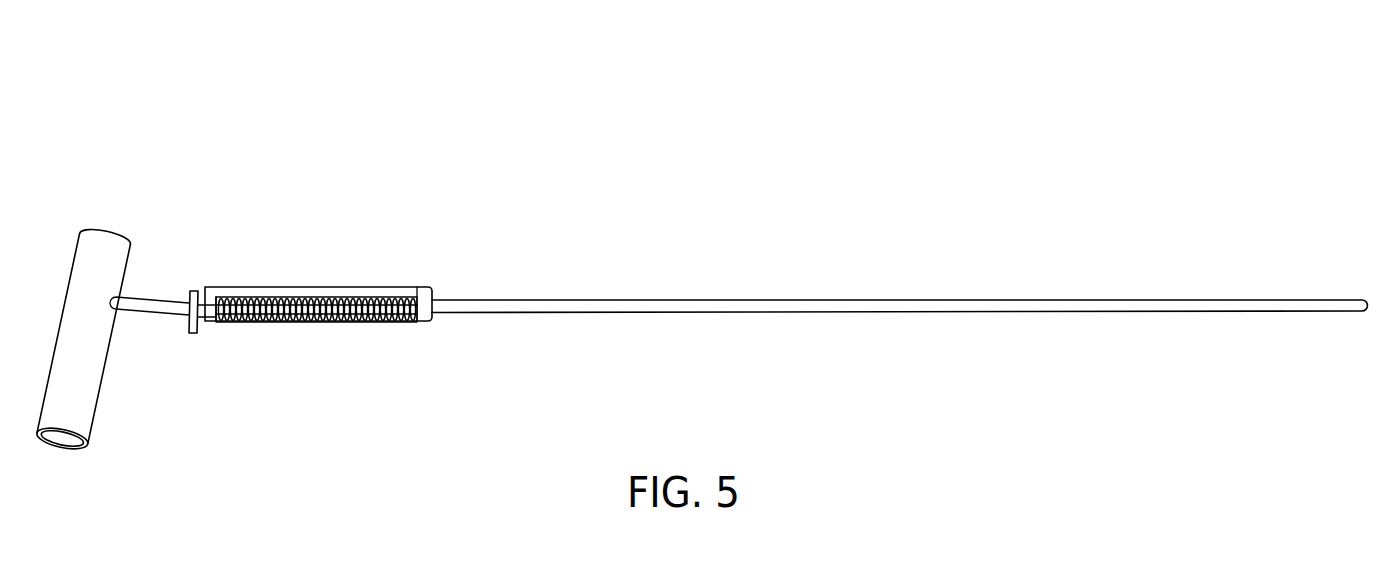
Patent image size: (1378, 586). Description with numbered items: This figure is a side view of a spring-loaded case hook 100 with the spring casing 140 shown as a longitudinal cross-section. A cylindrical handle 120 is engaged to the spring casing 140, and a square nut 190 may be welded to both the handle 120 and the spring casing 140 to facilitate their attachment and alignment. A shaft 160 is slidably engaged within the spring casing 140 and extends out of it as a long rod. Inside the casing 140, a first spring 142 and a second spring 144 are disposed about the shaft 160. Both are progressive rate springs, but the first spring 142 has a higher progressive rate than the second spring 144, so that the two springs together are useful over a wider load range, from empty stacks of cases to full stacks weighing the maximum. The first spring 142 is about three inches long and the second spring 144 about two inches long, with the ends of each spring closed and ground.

The spring-loaded case hook 100 is at (1082, 170).
The handle 120 is at (107, 230).
The spring casing 140 is at (313, 287).
The first spring 142 is at (378, 310).
The second spring 144 is at (253, 312).
The shaft 160 is at (1042, 300).
The square nut 190 is at (195, 290).